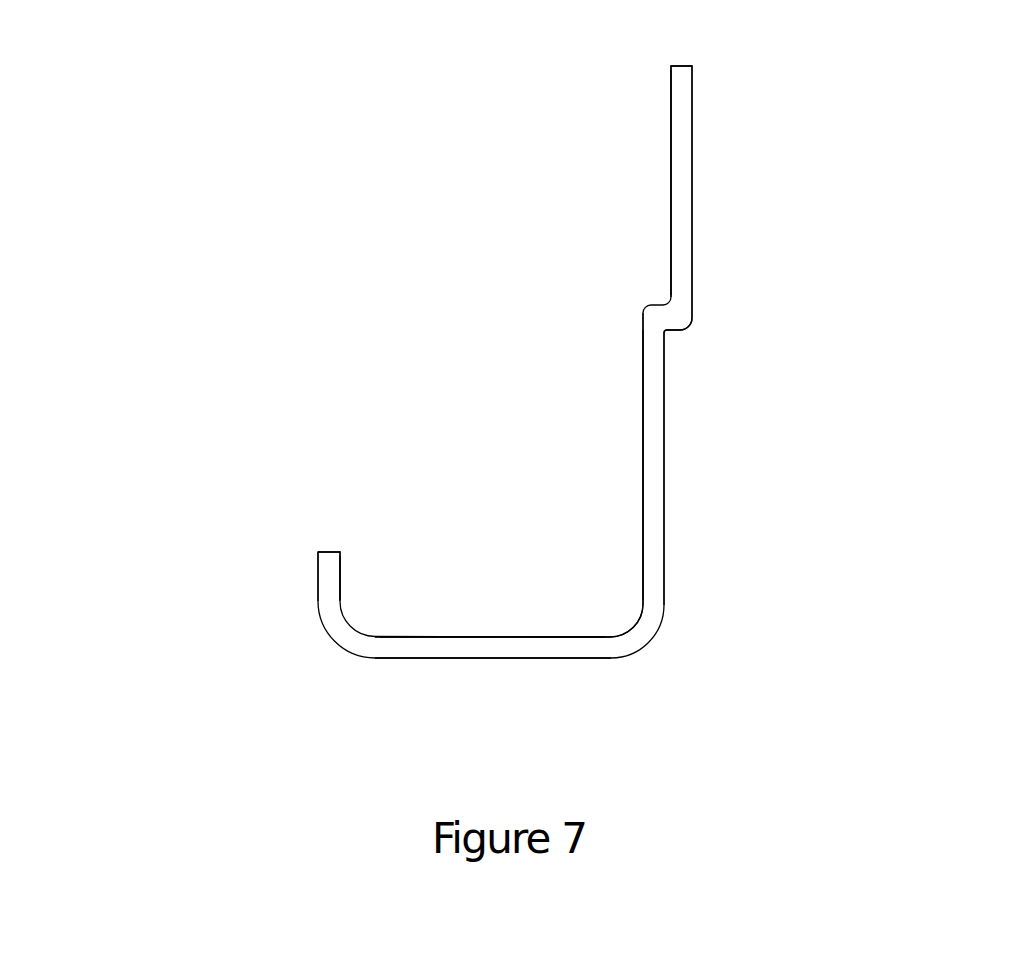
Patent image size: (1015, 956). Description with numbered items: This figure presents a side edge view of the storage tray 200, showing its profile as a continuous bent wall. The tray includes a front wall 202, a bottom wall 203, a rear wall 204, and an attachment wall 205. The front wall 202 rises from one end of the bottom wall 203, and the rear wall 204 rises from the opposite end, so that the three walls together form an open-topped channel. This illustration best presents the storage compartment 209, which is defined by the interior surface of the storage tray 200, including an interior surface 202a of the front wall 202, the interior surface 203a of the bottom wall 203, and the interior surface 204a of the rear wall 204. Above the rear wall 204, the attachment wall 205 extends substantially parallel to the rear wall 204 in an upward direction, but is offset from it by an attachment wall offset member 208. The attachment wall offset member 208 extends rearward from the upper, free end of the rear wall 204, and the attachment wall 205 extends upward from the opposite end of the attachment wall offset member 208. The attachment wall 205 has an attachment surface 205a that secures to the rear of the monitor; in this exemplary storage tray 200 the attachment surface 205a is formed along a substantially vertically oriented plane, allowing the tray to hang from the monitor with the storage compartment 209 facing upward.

The storage tray 200 is at (877, 124).
The front wall 202 is at (332, 580).
The interior surface of the front wall 202a is at (348, 576).
The bottom wall 203 is at (487, 647).
The interior surface of the bottom wall 203a is at (484, 630).
The rear wall 204 is at (655, 432).
The interior surface of the rear wall 204a is at (620, 410).
The attachment wall 205 is at (681, 200).
The attachment surface 205a is at (655, 185).
The attachment wall offset member 208 is at (664, 320).
The storage compartment 209 is at (543, 490).